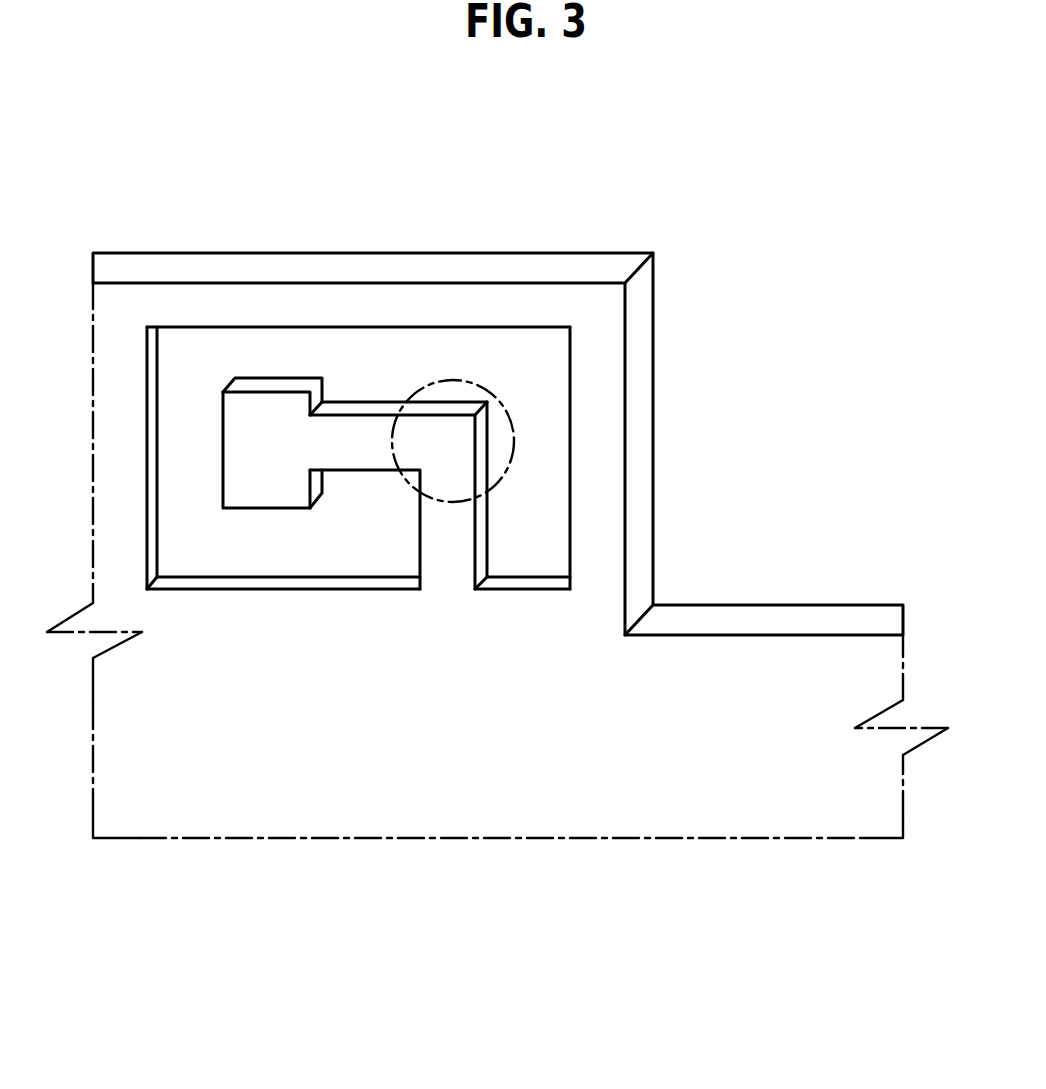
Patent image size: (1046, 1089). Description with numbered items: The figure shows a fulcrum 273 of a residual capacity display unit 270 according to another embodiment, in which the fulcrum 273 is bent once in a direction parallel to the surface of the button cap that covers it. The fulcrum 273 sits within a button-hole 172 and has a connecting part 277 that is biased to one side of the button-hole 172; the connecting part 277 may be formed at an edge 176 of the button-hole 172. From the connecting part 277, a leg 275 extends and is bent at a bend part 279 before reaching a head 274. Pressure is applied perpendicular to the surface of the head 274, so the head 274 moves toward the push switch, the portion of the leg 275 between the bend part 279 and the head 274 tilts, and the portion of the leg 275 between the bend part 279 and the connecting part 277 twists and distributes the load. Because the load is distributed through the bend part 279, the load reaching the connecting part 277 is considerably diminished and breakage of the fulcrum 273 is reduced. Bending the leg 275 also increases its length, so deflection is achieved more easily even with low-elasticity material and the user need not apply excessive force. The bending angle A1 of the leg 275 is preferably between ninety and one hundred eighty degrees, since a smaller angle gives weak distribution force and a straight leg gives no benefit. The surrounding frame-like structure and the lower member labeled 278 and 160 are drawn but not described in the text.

The chassis base 160 is at (730, 813).
The button-hole 172 is at (197, 345).
The edge 176 is at (572, 589).
The residual capacity display unit 270 is at (893, 163).
The fulcrum 273 is at (395, 168).
The head 274 is at (270, 402).
The leg 275 is at (371, 432).
The connecting part 277 is at (487, 575).
The frame body 278 is at (515, 288).
The bend part 279 is at (458, 452).
The bending angle A1 is at (420, 557).